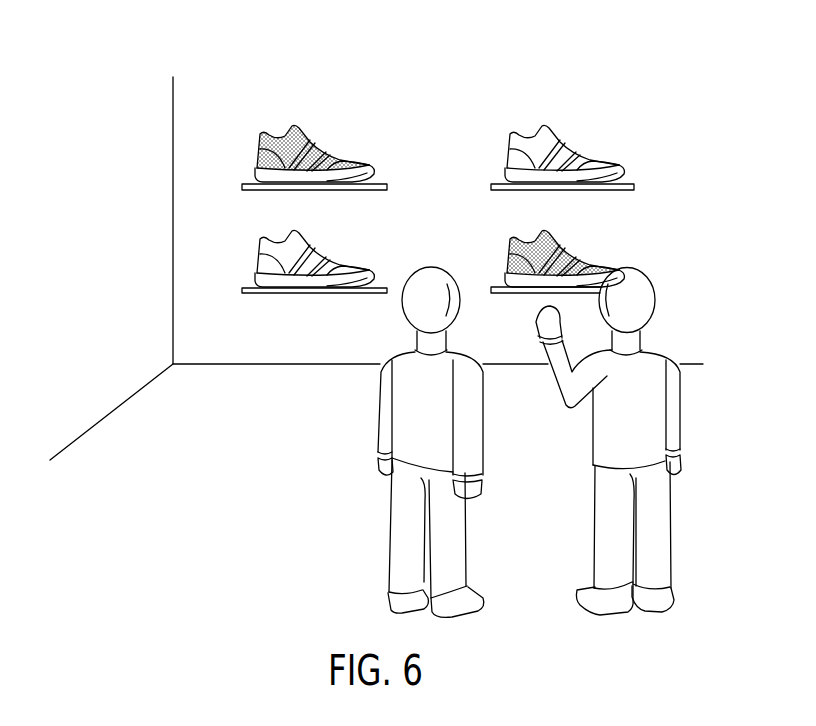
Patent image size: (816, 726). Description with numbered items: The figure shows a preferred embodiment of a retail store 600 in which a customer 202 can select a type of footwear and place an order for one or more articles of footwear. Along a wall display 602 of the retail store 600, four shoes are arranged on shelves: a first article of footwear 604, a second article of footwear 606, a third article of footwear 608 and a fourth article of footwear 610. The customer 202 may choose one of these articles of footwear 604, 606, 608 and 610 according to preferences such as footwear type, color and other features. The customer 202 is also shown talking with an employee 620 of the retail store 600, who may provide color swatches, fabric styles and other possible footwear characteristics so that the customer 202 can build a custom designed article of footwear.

The retail store 600 is at (514, 84).
The wall display 602 is at (193, 204).
The first article of footwear 604 is at (313, 150).
The second article of footwear 606 is at (578, 150).
The third article of footwear 608 is at (316, 257).
The fourth article of footwear 610 is at (565, 256).
The customer 202 is at (405, 420).
The employee 620 is at (657, 403).